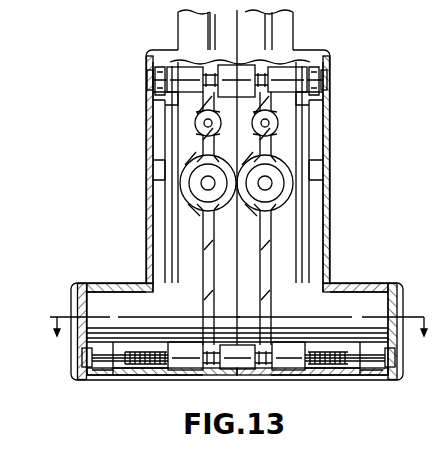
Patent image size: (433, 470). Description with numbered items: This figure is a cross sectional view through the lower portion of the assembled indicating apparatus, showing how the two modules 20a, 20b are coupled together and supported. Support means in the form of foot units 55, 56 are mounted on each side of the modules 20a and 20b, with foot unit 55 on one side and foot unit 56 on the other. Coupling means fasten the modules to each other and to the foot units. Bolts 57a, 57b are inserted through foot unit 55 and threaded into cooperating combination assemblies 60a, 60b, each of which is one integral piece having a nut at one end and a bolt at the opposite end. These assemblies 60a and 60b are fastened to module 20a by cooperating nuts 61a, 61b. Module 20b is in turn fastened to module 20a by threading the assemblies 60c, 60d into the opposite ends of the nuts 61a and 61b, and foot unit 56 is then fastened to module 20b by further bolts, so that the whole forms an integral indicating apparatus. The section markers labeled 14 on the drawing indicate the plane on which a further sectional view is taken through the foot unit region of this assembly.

The module 20a is at (176, 22).
The module 20b is at (296, 30).
The foot unit 55 is at (146, 210).
The foot unit 56 is at (330, 200).
The bolt 57a is at (147, 78).
The bolt 57b is at (82, 355).
The combination assembly 60a is at (178, 87).
The combination assembly 60b is at (190, 360).
The threading assembly 60c is at (283, 92).
The threading assembly 60d is at (296, 360).
The cooperating nut 61a is at (228, 92).
The cooperating nut 61b is at (237, 360).
The section line 14- 14 is at (241, 337).